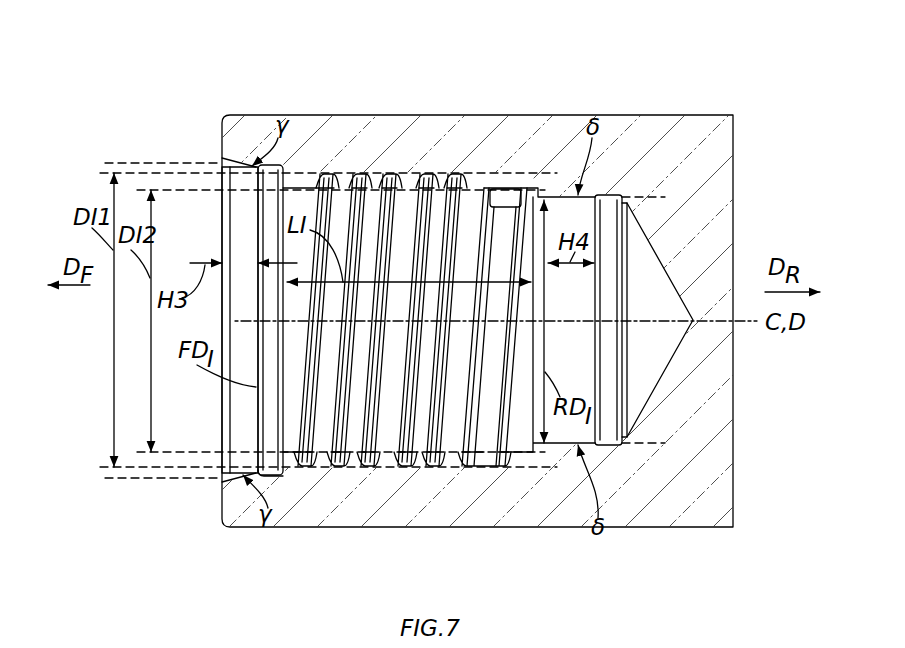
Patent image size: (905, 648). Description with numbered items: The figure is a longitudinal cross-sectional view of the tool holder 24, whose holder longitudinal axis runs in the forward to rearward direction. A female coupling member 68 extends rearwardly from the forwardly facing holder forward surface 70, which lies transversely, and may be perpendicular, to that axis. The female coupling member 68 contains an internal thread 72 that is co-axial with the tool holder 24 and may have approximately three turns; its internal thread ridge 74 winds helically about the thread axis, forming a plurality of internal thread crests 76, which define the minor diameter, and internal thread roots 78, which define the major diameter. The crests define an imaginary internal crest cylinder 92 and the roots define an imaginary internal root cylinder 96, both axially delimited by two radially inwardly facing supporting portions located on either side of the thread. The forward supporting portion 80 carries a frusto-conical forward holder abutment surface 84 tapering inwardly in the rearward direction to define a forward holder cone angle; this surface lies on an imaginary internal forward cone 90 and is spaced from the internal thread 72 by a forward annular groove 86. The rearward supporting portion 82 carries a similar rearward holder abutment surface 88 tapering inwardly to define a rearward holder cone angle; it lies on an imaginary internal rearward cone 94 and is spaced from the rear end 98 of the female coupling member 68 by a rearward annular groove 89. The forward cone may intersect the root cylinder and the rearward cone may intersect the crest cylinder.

The tool holder 24 is at (747, 95).
The female coupling member 68 is at (208, 245).
The holder forward surface 70 is at (222, 135).
The internal thread 72 is at (470, 340).
The internal thread ridge 74 is at (347, 183).
The internal thread crests 76 is at (423, 187).
The internal thread roots 78 is at (382, 183).
The forward supporting portion 80 is at (248, 200).
The rearward supporting portion 82 is at (569, 163).
The forward holder abutment surface 84 is at (240, 427).
The forward annular groove 86 is at (258, 478).
The rearward holder abutment surface 88 is at (596, 452).
The rearward annular groove 89 is at (618, 175).
The imaginary internal forward cone 90 is at (158, 165).
The imaginary internal crest cylinder 92 is at (300, 183).
The imaginary internal rearward cone 94 is at (652, 203).
The imaginary internal root cylinder 96 is at (488, 186).
The rear end 98 is at (650, 276).